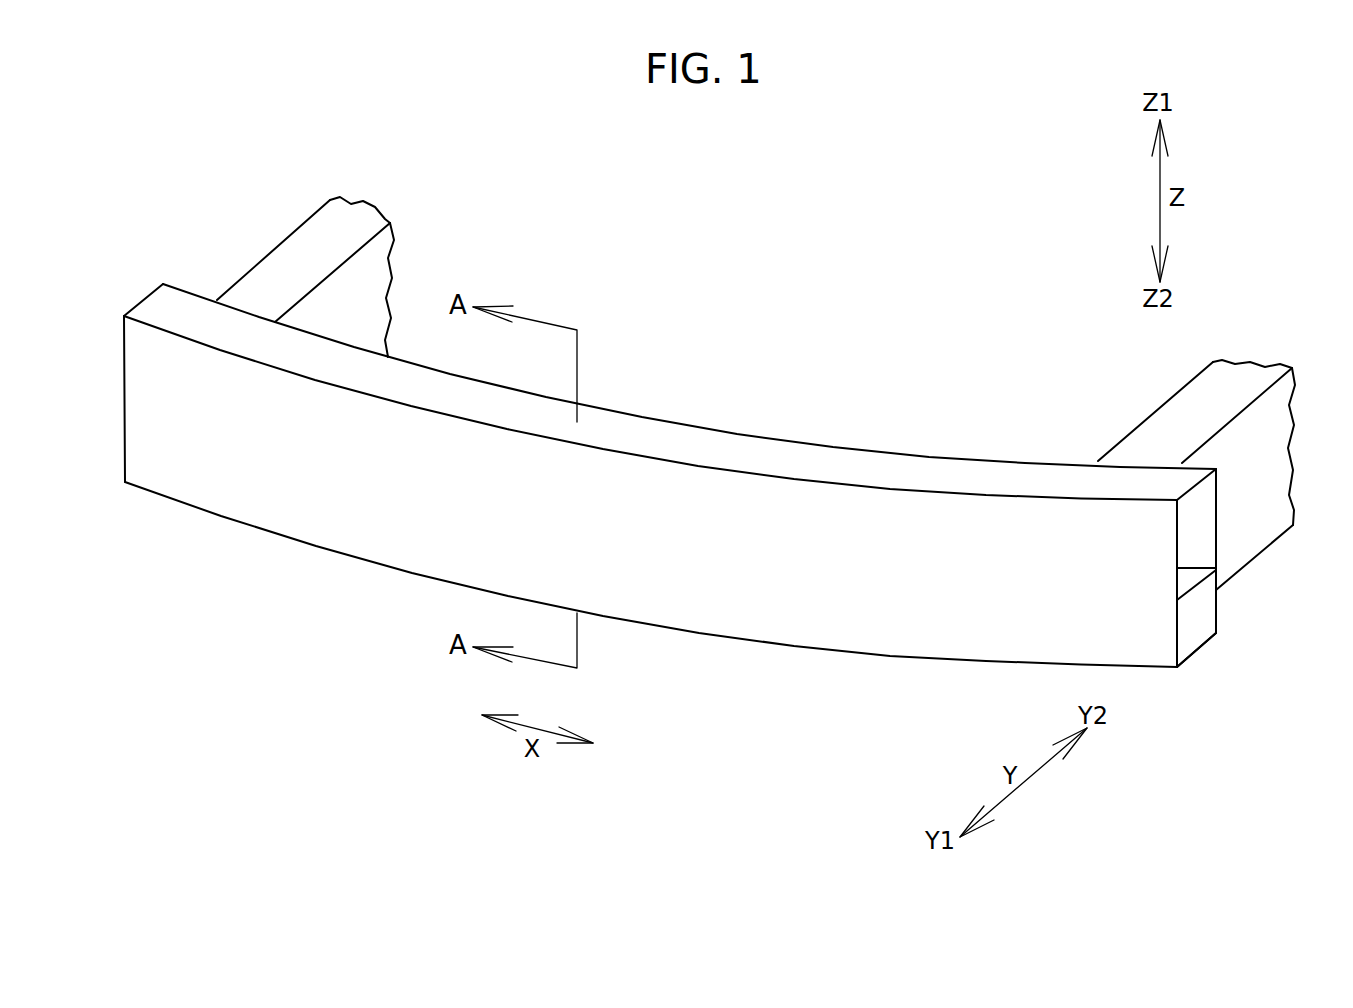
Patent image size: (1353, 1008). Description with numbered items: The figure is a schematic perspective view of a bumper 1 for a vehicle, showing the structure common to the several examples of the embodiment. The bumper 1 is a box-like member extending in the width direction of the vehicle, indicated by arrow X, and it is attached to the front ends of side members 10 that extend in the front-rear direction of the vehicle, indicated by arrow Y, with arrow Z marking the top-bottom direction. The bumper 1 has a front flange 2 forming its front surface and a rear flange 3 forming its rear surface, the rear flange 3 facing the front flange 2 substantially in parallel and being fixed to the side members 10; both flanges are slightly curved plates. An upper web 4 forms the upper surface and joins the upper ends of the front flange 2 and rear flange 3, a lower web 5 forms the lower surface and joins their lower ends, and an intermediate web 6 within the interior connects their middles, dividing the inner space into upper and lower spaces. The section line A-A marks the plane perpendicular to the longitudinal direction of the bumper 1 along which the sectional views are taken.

The bumper 1 is at (135, 297).
The front flange 2 is at (985, 647).
The rear flange 3 is at (1217, 522).
The upper web 4 is at (1031, 470).
The lower web 5 is at (1203, 645).
The intermediate web 6 is at (1197, 583).
The side members 10 is at (343, 223).